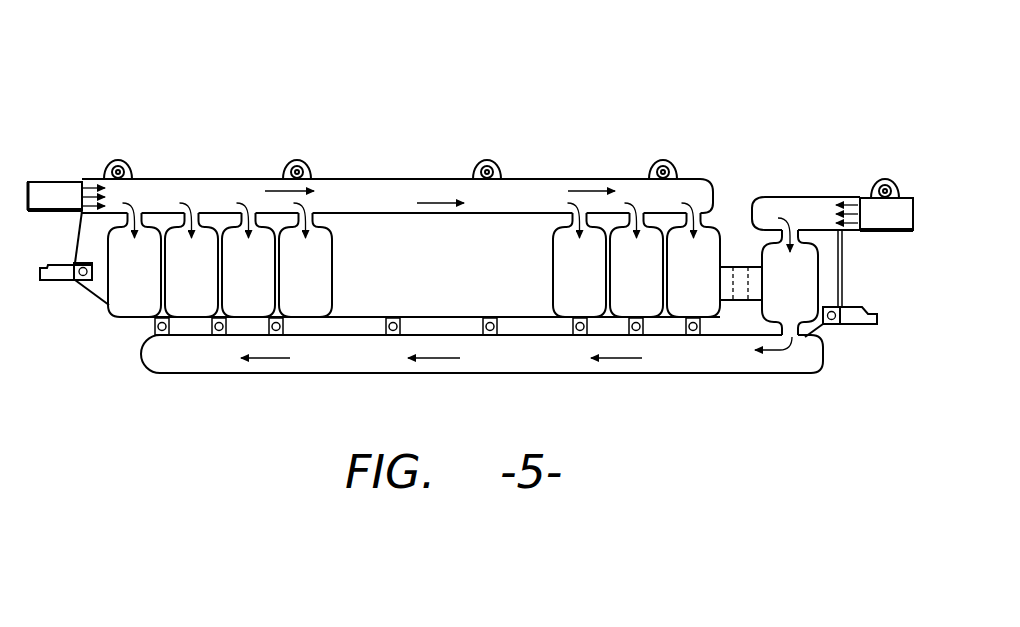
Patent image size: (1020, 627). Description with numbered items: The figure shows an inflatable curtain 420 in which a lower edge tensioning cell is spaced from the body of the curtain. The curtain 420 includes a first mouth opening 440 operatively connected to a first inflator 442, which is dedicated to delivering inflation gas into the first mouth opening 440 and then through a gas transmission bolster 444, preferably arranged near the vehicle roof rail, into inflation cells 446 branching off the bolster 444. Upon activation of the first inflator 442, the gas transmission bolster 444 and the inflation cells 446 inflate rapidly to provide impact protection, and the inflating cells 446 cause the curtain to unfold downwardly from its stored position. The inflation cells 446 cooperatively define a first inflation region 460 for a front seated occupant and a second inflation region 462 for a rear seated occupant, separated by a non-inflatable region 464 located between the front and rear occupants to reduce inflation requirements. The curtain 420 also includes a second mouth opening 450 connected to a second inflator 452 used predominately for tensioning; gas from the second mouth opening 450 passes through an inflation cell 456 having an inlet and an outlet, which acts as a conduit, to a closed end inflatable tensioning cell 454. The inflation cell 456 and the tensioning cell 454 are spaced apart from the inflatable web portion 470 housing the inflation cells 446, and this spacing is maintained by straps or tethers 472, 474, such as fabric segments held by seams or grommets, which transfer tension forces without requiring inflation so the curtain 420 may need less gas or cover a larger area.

The curtain 420 is at (614, 146).
The first mouth opening 440 is at (90, 183).
The first inflator 442 is at (55, 190).
The gas transmission bolster 444 is at (446, 187).
The inflation cells 446 is at (414, 220).
The second mouth opening 450 is at (848, 207).
The second inflator 452 is at (898, 206).
The tensioning cell 454 is at (713, 373).
The inflation cell 456 is at (768, 303).
The first inflation region 460 is at (344, 255).
The second inflation region 462 is at (545, 248).
The non-inflatable region 464 is at (425, 285).
The inflatable web portion 470 is at (88, 303).
The strap or tether 472 is at (738, 266).
The strap or tether 474 is at (153, 327).